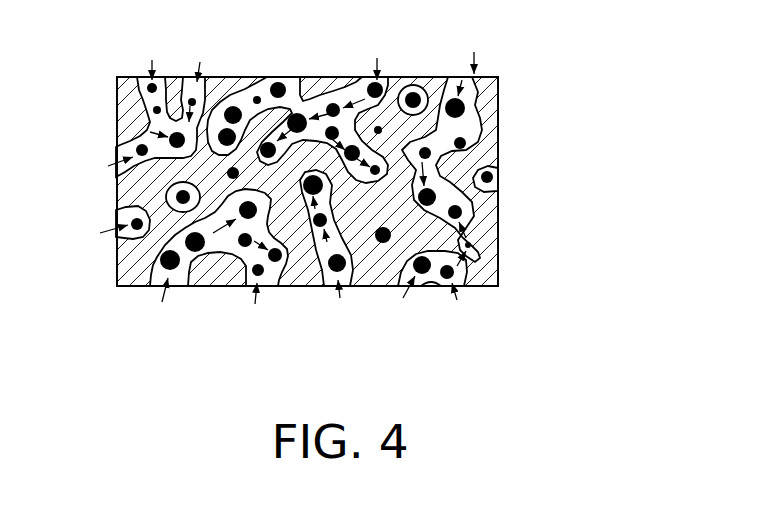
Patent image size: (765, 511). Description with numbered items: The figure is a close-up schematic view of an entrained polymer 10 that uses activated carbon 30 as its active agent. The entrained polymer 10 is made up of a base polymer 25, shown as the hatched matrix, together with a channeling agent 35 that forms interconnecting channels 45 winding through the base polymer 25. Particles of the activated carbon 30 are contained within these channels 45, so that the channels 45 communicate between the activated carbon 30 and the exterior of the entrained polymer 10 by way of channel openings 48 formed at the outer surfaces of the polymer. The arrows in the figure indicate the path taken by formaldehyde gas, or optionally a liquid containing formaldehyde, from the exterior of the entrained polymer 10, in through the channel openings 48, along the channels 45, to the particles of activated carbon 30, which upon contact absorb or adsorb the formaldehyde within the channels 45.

The entrained polymer 10 is at (548, 106).
The base polymer 25 is at (483, 160).
The activated carbon 30 is at (387, 90).
The channeling agent 35 is at (298, 79).
The interconnecting channels 45 is at (145, 134).
The channel openings 48 is at (163, 80).